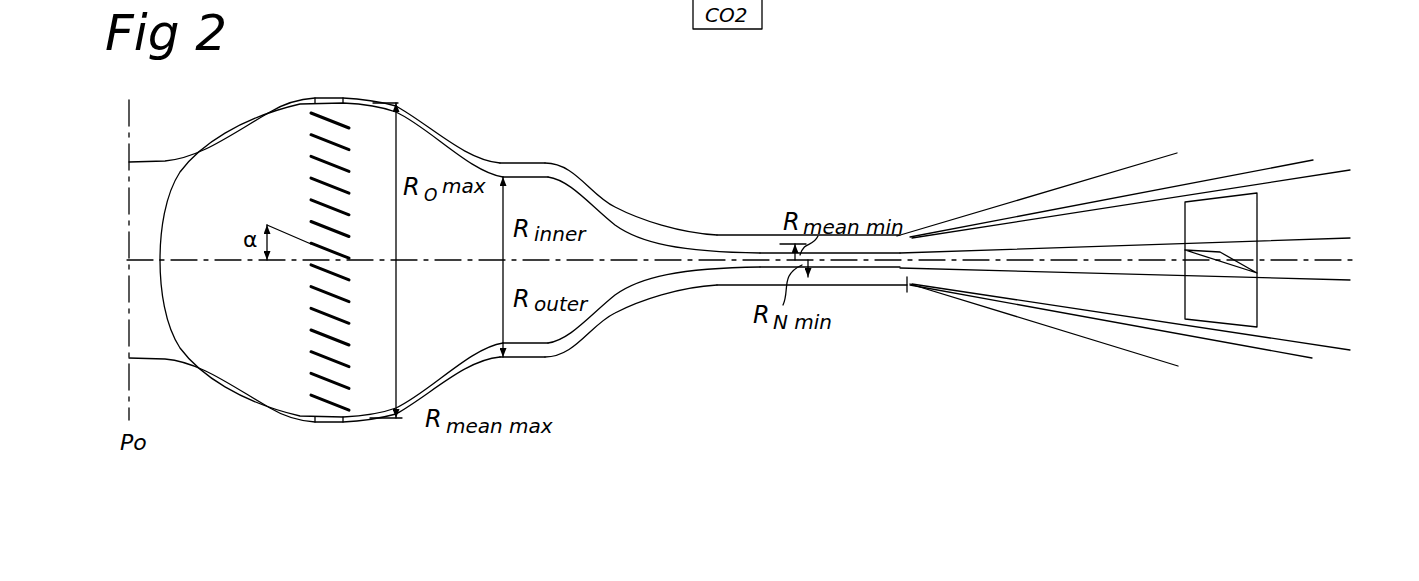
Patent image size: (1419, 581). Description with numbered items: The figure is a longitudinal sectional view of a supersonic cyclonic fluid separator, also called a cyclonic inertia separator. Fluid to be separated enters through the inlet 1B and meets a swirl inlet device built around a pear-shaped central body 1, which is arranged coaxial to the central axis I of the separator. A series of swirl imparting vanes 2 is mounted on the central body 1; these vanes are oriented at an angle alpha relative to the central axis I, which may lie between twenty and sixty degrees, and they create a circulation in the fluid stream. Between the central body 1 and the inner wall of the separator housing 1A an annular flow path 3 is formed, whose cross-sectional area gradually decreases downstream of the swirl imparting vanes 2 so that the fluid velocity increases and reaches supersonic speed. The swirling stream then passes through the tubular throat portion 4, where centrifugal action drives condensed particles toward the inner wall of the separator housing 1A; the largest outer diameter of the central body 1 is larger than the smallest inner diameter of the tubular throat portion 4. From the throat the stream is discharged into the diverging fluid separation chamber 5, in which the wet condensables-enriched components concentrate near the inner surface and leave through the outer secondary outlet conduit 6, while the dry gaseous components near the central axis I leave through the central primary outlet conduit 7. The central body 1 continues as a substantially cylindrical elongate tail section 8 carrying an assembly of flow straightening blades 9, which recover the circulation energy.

The central body 1 is at (253, 165).
The separator housing 1A is at (480, 160).
The inlet 1B is at (116, 274).
The swirl imparting vanes 2 is at (312, 310).
The annular flow path 3 is at (432, 134).
The tubular throat portion 4 is at (705, 245).
The diverging fluid separation chamber 5 is at (907, 280).
The outer secondary outlet conduit 6 is at (1093, 188).
The central primary outlet conduit 7 is at (1168, 302).
The elongate tail section 8 is at (967, 251).
The flow straightening blades 9 is at (1235, 217).
The central axis I is at (1357, 258).